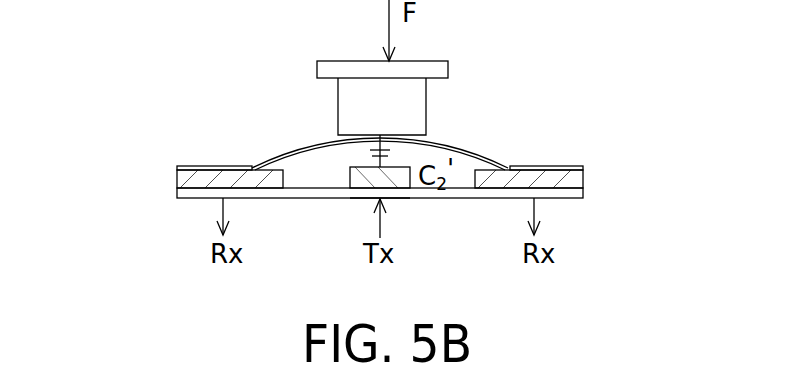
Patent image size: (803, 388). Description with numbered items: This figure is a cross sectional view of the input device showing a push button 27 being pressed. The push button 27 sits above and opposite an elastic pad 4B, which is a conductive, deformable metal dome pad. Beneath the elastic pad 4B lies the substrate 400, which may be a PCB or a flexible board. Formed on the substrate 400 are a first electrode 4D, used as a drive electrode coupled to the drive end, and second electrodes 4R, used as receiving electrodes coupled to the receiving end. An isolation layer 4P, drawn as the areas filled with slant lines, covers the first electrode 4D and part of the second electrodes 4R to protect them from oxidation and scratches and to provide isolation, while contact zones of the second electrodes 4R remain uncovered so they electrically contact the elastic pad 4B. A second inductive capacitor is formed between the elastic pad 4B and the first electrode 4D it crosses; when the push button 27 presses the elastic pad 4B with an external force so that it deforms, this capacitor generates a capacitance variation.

The push button 27 is at (417, 102).
The elastic pad 4B is at (452, 145).
The isolation layer 4P is at (210, 166).
The second electrode 4R is at (177, 176).
The substrate 400 is at (177, 193).
The first electrode 4D is at (362, 198).